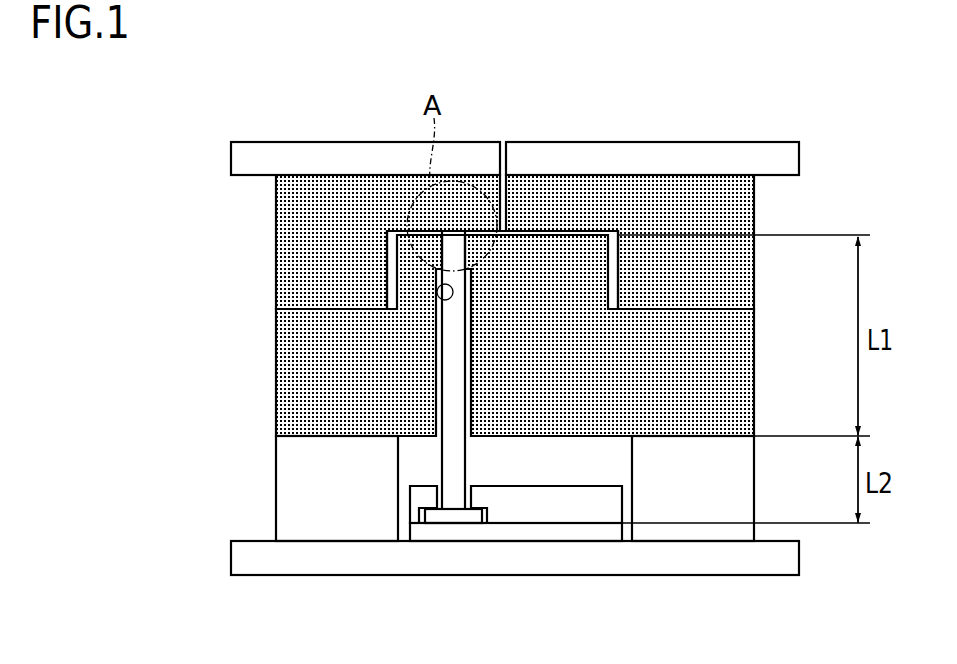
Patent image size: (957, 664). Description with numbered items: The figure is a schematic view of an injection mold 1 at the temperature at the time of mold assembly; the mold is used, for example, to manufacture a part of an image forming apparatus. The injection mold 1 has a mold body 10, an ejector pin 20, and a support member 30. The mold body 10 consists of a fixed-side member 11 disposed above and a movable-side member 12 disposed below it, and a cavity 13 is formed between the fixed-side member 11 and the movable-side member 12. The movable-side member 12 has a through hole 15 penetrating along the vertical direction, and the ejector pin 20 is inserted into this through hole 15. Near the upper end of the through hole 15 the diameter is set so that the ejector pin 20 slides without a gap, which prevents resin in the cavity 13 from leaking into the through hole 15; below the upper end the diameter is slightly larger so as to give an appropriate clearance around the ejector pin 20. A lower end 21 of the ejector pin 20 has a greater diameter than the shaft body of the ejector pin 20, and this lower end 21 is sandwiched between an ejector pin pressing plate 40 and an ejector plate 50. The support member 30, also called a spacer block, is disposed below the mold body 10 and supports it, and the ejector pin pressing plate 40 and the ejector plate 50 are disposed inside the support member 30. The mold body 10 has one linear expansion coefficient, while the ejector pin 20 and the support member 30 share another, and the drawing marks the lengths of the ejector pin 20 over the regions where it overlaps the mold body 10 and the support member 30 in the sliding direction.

The injection mold 1 is at (196, 97).
The mold body 10 is at (462, 305).
The fixed-side member 11 is at (276, 288).
The movable-side member 12 is at (212, 271).
The cavity 13 is at (388, 233).
The through hole 15 is at (438, 283).
The ejector pin 20 is at (460, 305).
The lower end 21 is at (454, 518).
The support member 30 is at (276, 500).
The ejector pin pressing plate 40 is at (543, 518).
The ejector plate 50 is at (497, 538).